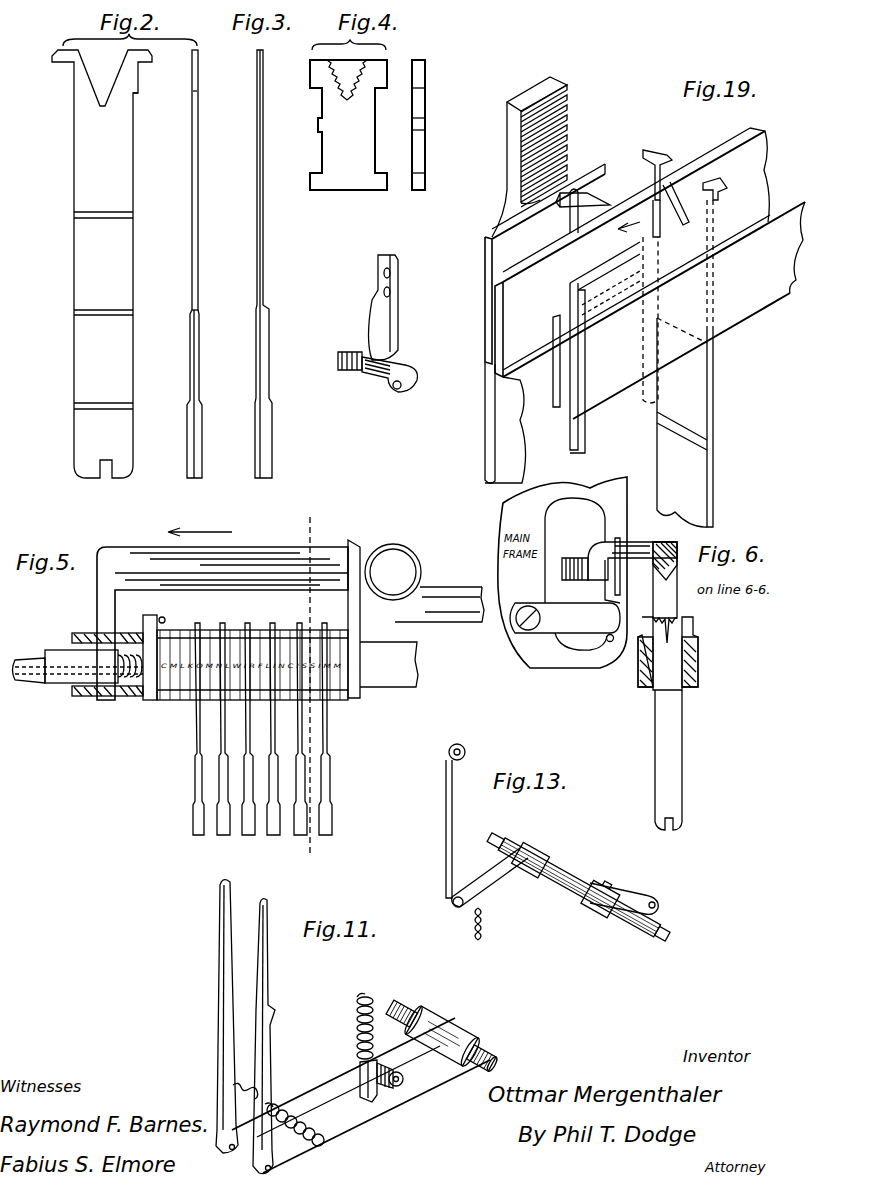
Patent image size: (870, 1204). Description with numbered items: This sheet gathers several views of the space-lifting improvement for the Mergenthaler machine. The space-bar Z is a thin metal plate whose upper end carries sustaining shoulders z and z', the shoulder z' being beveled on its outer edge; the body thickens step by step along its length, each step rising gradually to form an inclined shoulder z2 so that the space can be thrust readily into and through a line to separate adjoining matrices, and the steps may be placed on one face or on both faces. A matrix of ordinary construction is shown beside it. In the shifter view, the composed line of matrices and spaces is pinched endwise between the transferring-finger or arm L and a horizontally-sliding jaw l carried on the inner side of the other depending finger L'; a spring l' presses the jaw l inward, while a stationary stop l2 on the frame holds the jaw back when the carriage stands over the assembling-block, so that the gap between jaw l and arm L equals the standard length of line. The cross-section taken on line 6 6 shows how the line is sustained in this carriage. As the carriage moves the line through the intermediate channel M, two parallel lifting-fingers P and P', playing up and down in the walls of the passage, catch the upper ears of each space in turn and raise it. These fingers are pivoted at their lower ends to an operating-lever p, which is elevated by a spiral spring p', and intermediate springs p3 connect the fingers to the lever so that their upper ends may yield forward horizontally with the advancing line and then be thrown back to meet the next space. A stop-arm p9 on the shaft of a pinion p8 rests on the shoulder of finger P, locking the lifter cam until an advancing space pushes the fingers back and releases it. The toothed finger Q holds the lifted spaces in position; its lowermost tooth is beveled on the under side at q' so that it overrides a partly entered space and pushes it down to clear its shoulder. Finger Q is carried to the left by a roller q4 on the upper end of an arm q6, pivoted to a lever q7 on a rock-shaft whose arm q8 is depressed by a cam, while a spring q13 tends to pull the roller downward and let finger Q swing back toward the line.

In FIG. 2, the space-bar Z is at (102, 264).
In FIG. 19, the space-bar Z is at (715, 394).
In FIG. 6, the space-bar Z is at (670, 723).
In FIG. 2, the sustaining shoulder z' is at (206, 177).
In FIG. 2, the sustaining shoulder z is at (205, 92).
In FIG. 2, the inclined shoulder z2 is at (191, 214).
In FIG. 3, the inclined shoulder z2 is at (256, 308).
In FIG. 4, the intermediate supporting-channel M is at (418, 125).
In FIG. 19, the intermediate supporting-channel M is at (730, 186).
In FIG. 19, the toothed finger Q is at (470, 422).
In FIG. 19, the beveled under side of lowermost tooth q' is at (583, 188).
In FIG. 19, the lifting-finger P is at (596, 321).
In FIG. 11, the lifting-finger P is at (217, 1016).
In FIG. 19, the lifting-finger P' is at (666, 276).
In FIG. 11, the lifting-finger P' is at (270, 1036).
In FIG. 19, the pinion p8 is at (337, 360).
In FIG. 19, the stop-arm p9 is at (395, 376).
In FIG. 5, the section line 6 is at (308, 685).
In FIG. 5, the transferring-finger L is at (422, 615).
In FIG. 6, the transferring-finger L is at (619, 590).
In FIG. 5, the transferring-finger L' is at (213, 620).
In FIG. 5, the horizontally-sliding jaw l is at (148, 674).
In FIG. 5, the spring l' is at (78, 686).
In FIG. 5, the stationary stop l2 is at (166, 619).
In FIG. 13, the roller q4 is at (449, 752).
In FIG. 13, the arm q6 is at (445, 813).
In FIG. 13, the lever q7 is at (500, 880).
In FIG. 13, the arm q8 is at (628, 898).
In FIG. 13, the spring q13 is at (474, 922).
In FIG. 11, the operating-lever p is at (367, 1083).
In FIG. 11, the spiral spring p' is at (365, 1047).
In FIG. 11, the intermediate springs p3 is at (240, 1086).